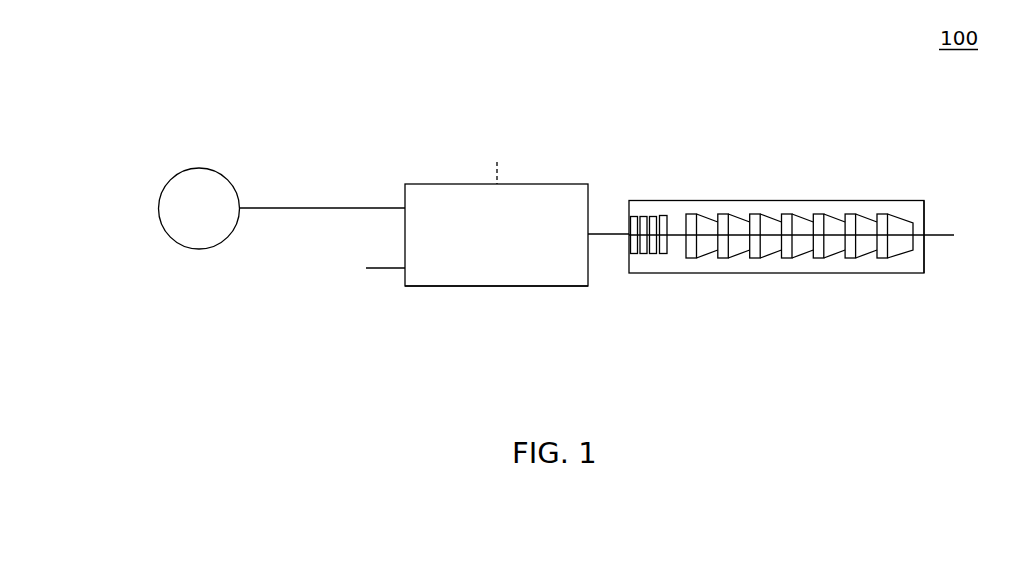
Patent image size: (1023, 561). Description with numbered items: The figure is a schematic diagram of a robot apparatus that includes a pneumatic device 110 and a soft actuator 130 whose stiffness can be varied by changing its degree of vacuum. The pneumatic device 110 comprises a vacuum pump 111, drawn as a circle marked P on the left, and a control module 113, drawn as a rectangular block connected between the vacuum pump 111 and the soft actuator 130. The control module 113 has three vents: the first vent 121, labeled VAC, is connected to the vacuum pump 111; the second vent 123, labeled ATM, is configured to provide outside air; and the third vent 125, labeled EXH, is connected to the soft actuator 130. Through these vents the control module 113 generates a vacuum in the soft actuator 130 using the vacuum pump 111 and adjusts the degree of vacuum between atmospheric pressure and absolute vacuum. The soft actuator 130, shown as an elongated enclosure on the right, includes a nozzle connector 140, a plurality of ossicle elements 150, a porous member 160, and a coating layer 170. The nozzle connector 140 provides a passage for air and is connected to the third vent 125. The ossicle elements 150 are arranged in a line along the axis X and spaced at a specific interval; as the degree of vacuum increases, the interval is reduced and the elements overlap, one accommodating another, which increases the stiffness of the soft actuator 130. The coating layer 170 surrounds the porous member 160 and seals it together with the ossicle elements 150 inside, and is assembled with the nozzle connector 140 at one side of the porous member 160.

The pneumatic device 110 is at (441, 183).
The vacuum pump 111 is at (199, 249).
The control module 113 is at (497, 286).
The first vent 121 is at (403, 207).
The second vent 123 is at (403, 269).
The third vent 125 is at (590, 237).
The soft actuator 130 is at (773, 199).
The nozzle connector 140 is at (653, 216).
The ossicle element 150 is at (800, 250).
The porous member 160 is at (837, 213).
The coating layer 170 is at (903, 200).